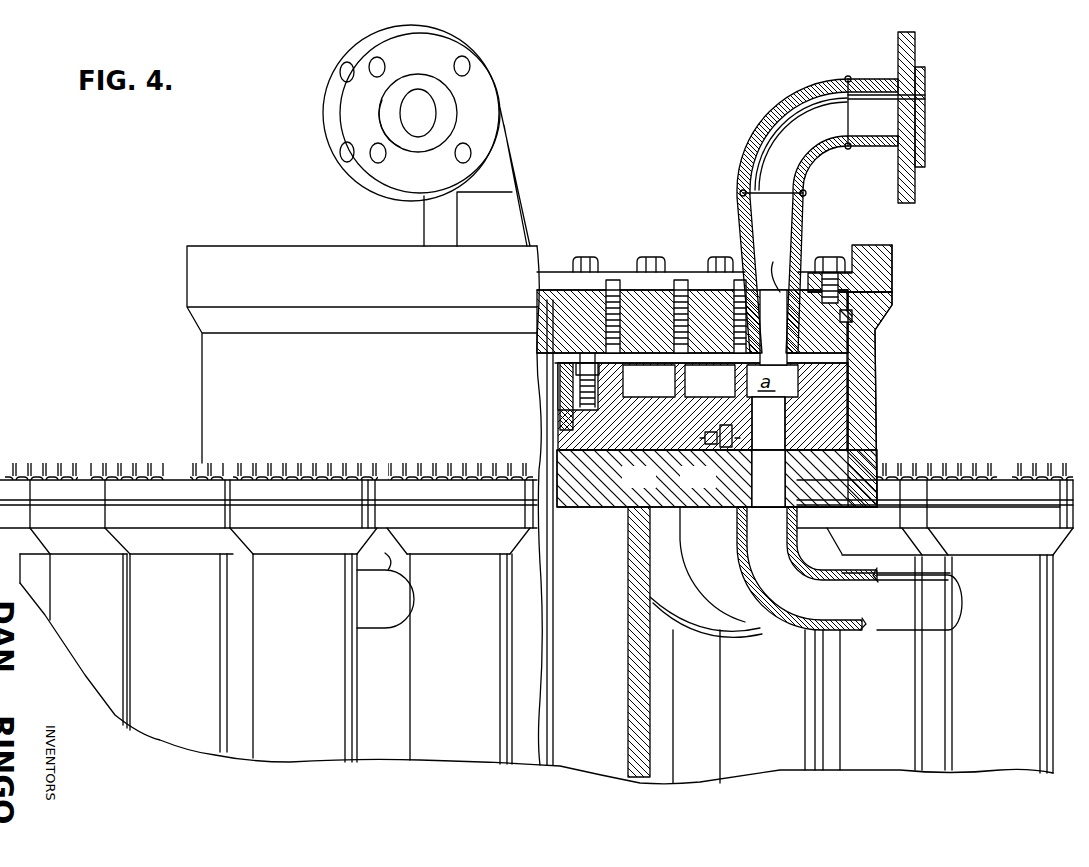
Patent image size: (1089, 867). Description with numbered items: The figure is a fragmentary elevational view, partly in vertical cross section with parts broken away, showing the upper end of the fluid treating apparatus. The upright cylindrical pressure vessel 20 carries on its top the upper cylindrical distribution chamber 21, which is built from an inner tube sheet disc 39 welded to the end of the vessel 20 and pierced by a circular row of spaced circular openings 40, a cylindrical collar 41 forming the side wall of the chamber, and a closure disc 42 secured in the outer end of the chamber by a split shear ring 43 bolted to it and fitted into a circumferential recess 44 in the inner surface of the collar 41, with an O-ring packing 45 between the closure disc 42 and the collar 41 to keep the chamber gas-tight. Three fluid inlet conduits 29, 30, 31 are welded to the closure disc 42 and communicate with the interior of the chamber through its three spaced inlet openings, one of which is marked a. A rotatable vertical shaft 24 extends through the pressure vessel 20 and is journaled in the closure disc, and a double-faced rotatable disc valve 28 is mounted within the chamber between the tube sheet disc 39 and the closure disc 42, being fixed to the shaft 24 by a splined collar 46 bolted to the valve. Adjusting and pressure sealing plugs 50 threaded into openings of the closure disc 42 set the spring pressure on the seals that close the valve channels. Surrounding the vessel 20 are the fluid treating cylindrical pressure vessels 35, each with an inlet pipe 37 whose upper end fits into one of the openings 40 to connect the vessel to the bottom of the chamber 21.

The upright cylindrical pressure vessel 20 is at (652, 765).
The upper cylindrical distribution chamber 21 is at (896, 395).
The rotatable vertical shaft 24 is at (557, 608).
The double-faced rotatable disc valve 28 is at (850, 411).
The fluid inlet conduit 29 is at (742, 143).
The fluid inlet conduit 30 is at (372, 30).
The fluid inlet conduit 31 is at (517, 156).
The fluid treating cylindrical pressure vessels 35 is at (330, 776).
The inlet pipe 37 is at (785, 622).
The inner tube sheet disc 39 is at (648, 488).
The circular openings 40 is at (698, 477).
The cylindrical collar 41 is at (873, 373).
The closure disc 42 is at (640, 290).
The split shear ring 43 is at (855, 272).
The circumferential recess 44 is at (882, 293).
The O-ring packing 45 is at (853, 318).
The splined collar 46 is at (575, 383).
The adjusting and pressure sealing plug 50 is at (680, 290).